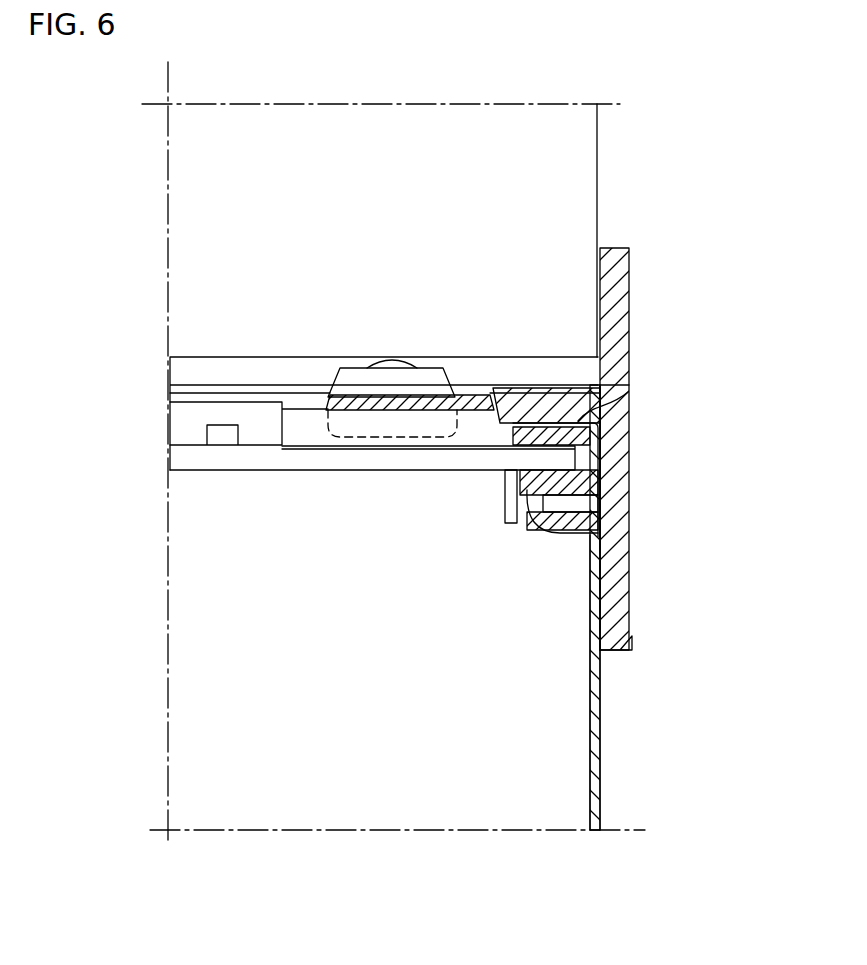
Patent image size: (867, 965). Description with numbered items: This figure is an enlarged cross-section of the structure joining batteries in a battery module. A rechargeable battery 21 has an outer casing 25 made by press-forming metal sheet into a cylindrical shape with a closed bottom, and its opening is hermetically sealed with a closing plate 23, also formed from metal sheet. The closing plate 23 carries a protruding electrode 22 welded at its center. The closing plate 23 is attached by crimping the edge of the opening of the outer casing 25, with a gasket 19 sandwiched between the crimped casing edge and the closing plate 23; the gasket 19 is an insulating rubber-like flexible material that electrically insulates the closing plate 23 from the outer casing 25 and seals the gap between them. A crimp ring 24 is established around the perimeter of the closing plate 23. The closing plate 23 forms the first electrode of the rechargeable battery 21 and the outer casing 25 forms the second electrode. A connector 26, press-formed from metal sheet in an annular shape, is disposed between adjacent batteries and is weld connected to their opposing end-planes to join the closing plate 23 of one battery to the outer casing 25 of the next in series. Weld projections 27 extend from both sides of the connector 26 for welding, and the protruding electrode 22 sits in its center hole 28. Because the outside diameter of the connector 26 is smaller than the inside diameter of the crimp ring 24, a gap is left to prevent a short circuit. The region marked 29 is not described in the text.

The gasket 19 is at (587, 466).
The rechargeable battery 21 is at (608, 168).
The protruding electrode 22 is at (176, 424).
The closing plate 23 is at (247, 466).
The crimp ring 24 is at (627, 388).
The outer casing 25 is at (318, 257).
The connector 26 is at (445, 362).
The weld projections 27 is at (389, 365).
The center hole 28 is at (318, 393).
The engaging portion 29 is at (640, 410).